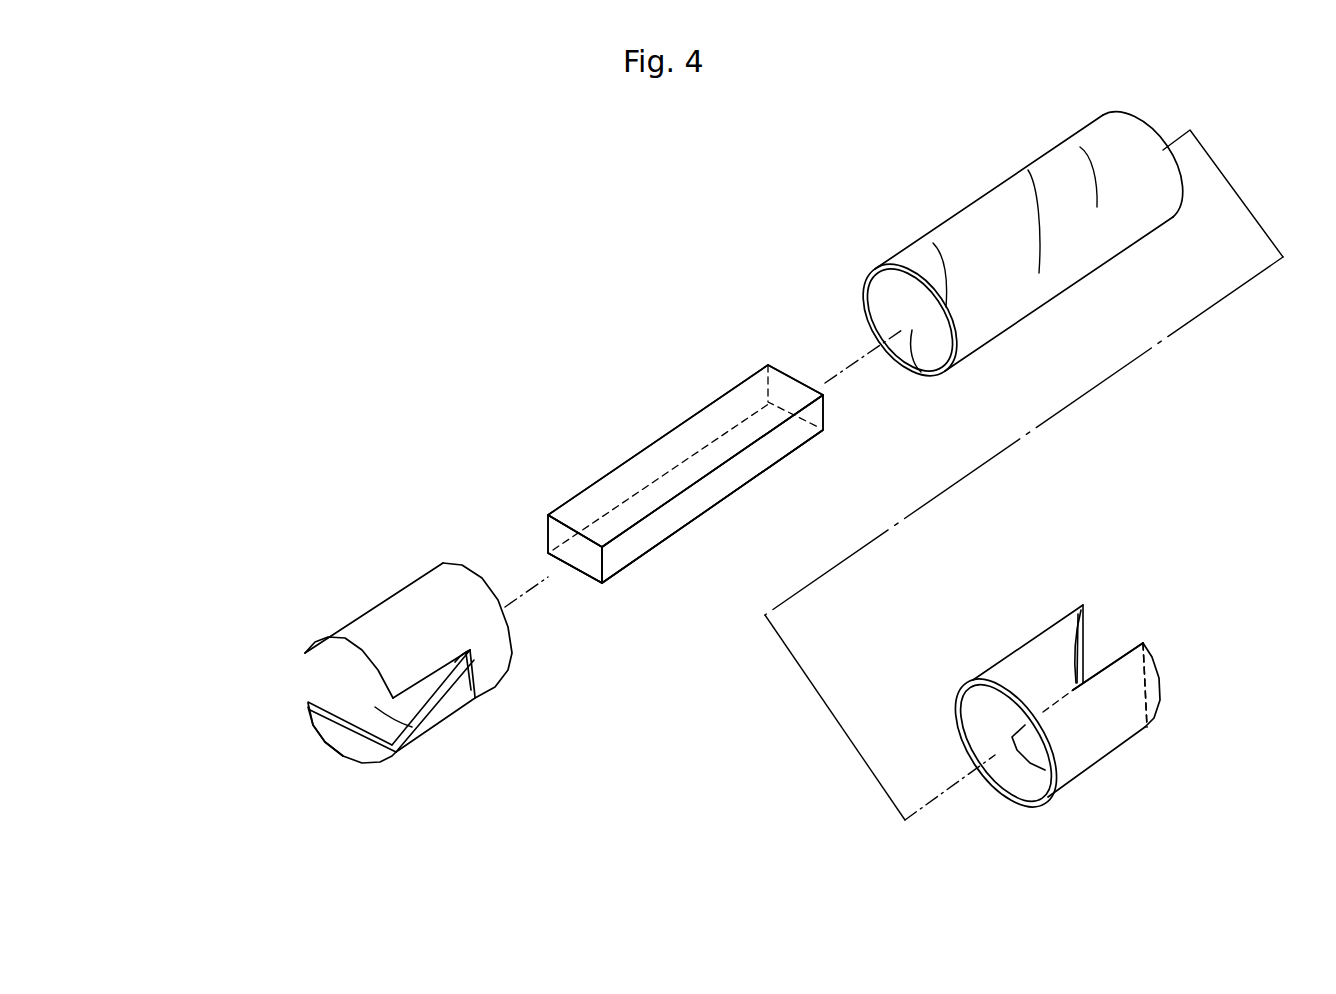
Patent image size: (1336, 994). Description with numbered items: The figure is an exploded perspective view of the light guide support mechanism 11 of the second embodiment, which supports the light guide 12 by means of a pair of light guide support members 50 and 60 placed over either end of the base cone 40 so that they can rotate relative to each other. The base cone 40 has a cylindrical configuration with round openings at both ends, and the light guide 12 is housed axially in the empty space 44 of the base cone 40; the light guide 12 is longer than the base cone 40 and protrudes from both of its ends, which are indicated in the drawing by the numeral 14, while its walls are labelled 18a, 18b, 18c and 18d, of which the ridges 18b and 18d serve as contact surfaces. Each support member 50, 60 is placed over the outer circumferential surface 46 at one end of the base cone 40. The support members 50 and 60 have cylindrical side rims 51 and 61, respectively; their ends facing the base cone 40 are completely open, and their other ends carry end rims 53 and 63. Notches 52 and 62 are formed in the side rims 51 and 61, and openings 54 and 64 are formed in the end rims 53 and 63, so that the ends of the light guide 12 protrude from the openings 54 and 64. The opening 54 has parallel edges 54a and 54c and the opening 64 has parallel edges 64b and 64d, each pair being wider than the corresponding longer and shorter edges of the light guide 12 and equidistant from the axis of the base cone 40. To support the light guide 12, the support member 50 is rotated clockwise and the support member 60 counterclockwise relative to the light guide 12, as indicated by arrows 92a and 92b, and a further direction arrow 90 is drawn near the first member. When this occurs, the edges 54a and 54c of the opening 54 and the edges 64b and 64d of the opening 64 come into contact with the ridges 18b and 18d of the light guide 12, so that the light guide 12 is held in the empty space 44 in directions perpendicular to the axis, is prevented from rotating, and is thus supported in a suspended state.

The light guide support mechanism 11 is at (510, 230).
The light guide 12 is at (665, 435).
The end opening of sleeve 14 is at (582, 553).
The top wall of sleeve 18a is at (618, 467).
The ridge 18b is at (695, 483).
The bottom wall of sleeve 18c is at (693, 525).
The ridge 18d is at (618, 505).
The base cone 40 is at (983, 197).
The empty space 44 is at (922, 377).
The outer circumferential surface 46 is at (933, 247).
The light guide support member 50 is at (370, 666).
The side rim 51 is at (360, 622).
The notch 52 is at (424, 700).
The end rim 53 is at (370, 752).
The opening 54 is at (415, 730).
The edge 54a is at (332, 665).
The edge 54c is at (353, 723).
The light guide support member 60 is at (1106, 674).
The side rim 61 is at (1030, 636).
The notch 62 is at (1058, 647).
The end rim 63 is at (1153, 697).
The opening 64 is at (1100, 652).
The edge 64b is at (1163, 668).
The edge 64d is at (1097, 632).
The rotation direction 90 is at (327, 847).
The arrow 92a is at (287, 634).
The arrow 92b is at (1062, 830).